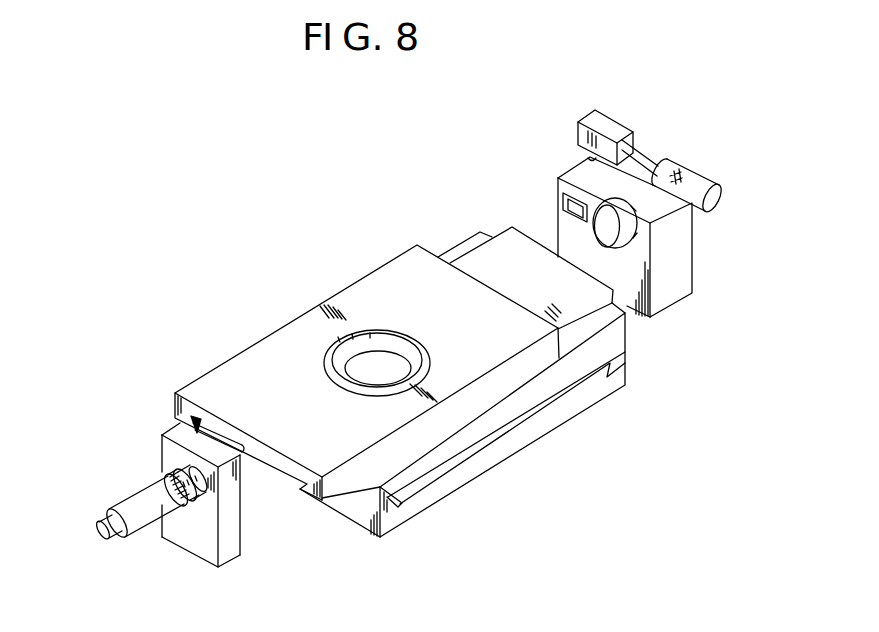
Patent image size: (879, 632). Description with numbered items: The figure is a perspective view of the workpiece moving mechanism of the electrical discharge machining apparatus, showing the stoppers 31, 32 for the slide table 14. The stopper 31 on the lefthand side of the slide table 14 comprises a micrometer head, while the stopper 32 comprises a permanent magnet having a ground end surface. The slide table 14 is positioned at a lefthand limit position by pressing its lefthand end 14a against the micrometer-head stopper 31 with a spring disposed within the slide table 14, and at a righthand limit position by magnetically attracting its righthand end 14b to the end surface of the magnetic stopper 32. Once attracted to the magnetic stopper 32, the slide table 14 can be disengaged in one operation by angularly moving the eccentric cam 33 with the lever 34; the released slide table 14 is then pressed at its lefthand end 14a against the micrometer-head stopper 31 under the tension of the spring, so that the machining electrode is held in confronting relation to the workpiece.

The slide table 14 is at (360, 292).
The lefthand end of the slide table 14a is at (296, 479).
The righthand end of the slide table 14b is at (467, 270).
The stopper 31 is at (140, 498).
The stopper 32 is at (595, 212).
The eccentric cam 33 is at (559, 197).
The lever 34 is at (695, 181).